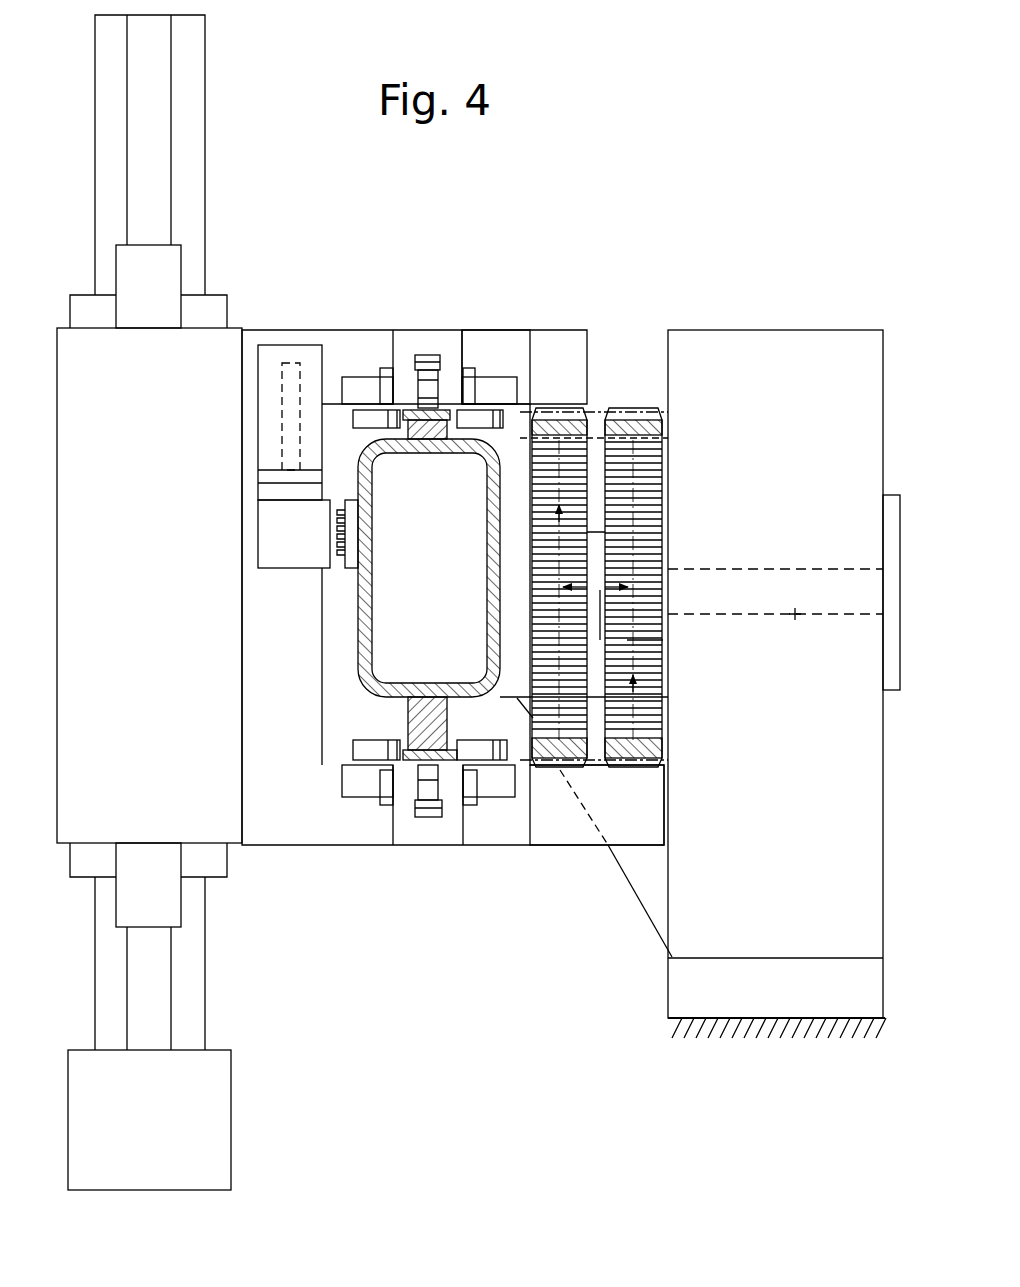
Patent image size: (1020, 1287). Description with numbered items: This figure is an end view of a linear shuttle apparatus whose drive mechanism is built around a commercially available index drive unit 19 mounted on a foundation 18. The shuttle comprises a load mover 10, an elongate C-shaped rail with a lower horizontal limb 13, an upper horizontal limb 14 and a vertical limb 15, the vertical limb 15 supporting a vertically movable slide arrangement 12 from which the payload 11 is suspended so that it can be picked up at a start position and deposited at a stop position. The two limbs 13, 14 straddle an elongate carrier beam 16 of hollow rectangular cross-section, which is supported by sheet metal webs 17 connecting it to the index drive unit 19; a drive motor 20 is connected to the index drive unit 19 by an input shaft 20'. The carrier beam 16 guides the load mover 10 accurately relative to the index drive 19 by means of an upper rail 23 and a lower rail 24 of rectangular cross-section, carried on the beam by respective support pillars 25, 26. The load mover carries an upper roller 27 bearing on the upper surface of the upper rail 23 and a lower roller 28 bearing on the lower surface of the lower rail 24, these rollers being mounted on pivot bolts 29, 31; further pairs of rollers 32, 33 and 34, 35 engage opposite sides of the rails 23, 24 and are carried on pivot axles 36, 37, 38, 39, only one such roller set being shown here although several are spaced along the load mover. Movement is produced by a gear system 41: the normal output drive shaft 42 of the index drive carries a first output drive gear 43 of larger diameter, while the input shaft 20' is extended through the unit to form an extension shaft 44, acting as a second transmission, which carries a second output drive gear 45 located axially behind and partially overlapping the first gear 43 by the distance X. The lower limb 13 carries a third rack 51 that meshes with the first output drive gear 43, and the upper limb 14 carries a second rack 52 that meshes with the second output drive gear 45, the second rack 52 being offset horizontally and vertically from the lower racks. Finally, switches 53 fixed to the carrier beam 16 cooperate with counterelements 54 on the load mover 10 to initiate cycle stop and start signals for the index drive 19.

The load mover 10 is at (345, 848).
The payload 11 is at (237, 1127).
The vertically movable slide arrangement 12 is at (190, 964).
The lower horizontal limb 13 is at (585, 773).
The upper horizontal limb 14 is at (497, 345).
The vertical limb 15 is at (252, 683).
The carrier beam 16 is at (367, 577).
The sheet metal webs 17 is at (595, 445).
The foundation 18 is at (727, 1010).
The index drive unit 19 is at (768, 345).
The drive motor 20 is at (908, 610).
The input shaft 20' is at (811, 634).
The upper rail 23 is at (433, 447).
The lower rail 24 is at (433, 717).
The support pillar 25 is at (413, 450).
The support pillar 26 is at (405, 717).
The upper roller 27 is at (425, 355).
The lower roller 28 is at (430, 817).
The pivot bolt 29 is at (473, 367).
The pivot bolt 31 is at (472, 805).
The roller 32 is at (355, 407).
The roller 33 is at (507, 420).
The roller 34 is at (352, 752).
The roller 35 is at (505, 760).
The pivot axle 36 is at (373, 402).
The pivot axle 37 is at (507, 418).
The pivot axle 38 is at (380, 775).
The pivot axle 39 is at (490, 767).
The gear system 41 is at (672, 520).
The output drive shaft 42 is at (663, 637).
The first output drive gear 43 is at (655, 713).
The extension shaft 44 is at (590, 628).
The second output drive gear 45 is at (583, 490).
The third rack 51 is at (665, 757).
The second rack 52 is at (577, 408).
The proximity switches 53 is at (350, 562).
The counterelements 54 is at (327, 532).